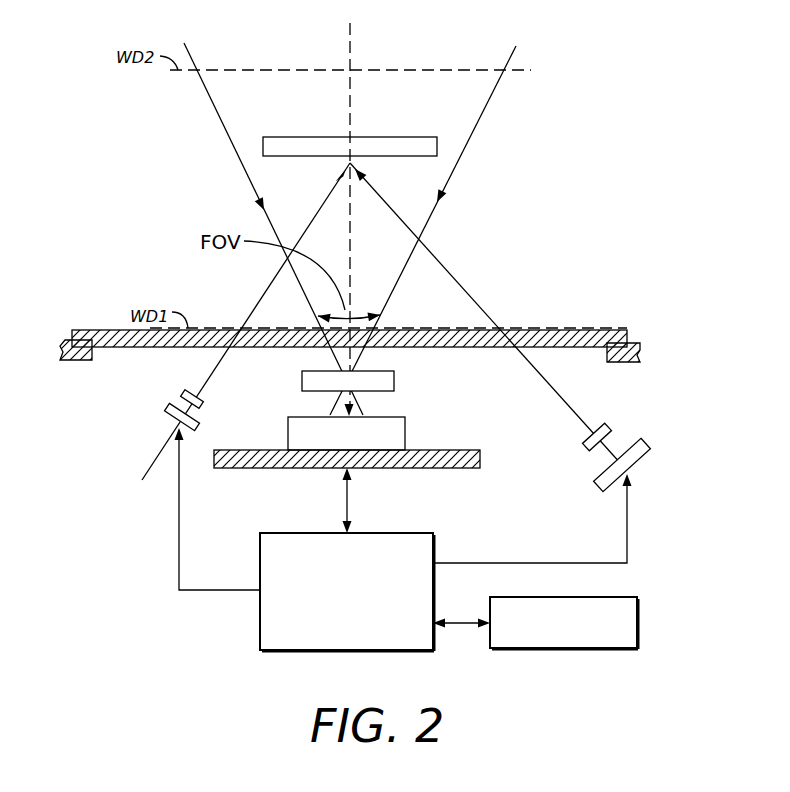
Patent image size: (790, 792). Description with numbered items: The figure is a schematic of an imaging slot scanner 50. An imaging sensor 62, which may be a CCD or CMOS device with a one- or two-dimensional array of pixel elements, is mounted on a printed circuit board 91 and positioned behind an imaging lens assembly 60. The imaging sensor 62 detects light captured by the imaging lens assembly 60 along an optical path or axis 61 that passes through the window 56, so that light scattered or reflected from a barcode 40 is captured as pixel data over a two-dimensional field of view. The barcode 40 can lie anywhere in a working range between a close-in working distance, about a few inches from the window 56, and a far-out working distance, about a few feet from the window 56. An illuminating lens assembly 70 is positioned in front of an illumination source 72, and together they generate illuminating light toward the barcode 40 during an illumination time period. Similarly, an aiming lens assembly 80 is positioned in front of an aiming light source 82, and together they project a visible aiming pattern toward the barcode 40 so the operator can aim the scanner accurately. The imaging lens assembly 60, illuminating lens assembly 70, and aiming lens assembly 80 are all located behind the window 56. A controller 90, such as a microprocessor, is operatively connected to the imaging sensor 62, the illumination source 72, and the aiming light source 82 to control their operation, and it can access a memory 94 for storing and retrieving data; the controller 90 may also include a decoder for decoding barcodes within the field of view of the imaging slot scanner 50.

The barcode 40 is at (408, 137).
The imaging slot scanner 50 is at (588, 150).
The window 56 is at (100, 329).
The imaging lens assembly 60 is at (397, 380).
The optical path or axis 61 is at (353, 42).
The imaging sensor 62 is at (297, 417).
The illuminating lens assembly 70 is at (605, 425).
The illumination source 72 is at (648, 446).
The aiming lens assembly 80 is at (187, 392).
The aiming light source 82 is at (168, 412).
The controller 90 is at (283, 533).
The printed circuit board 91 is at (466, 450).
The memory 94 is at (620, 597).